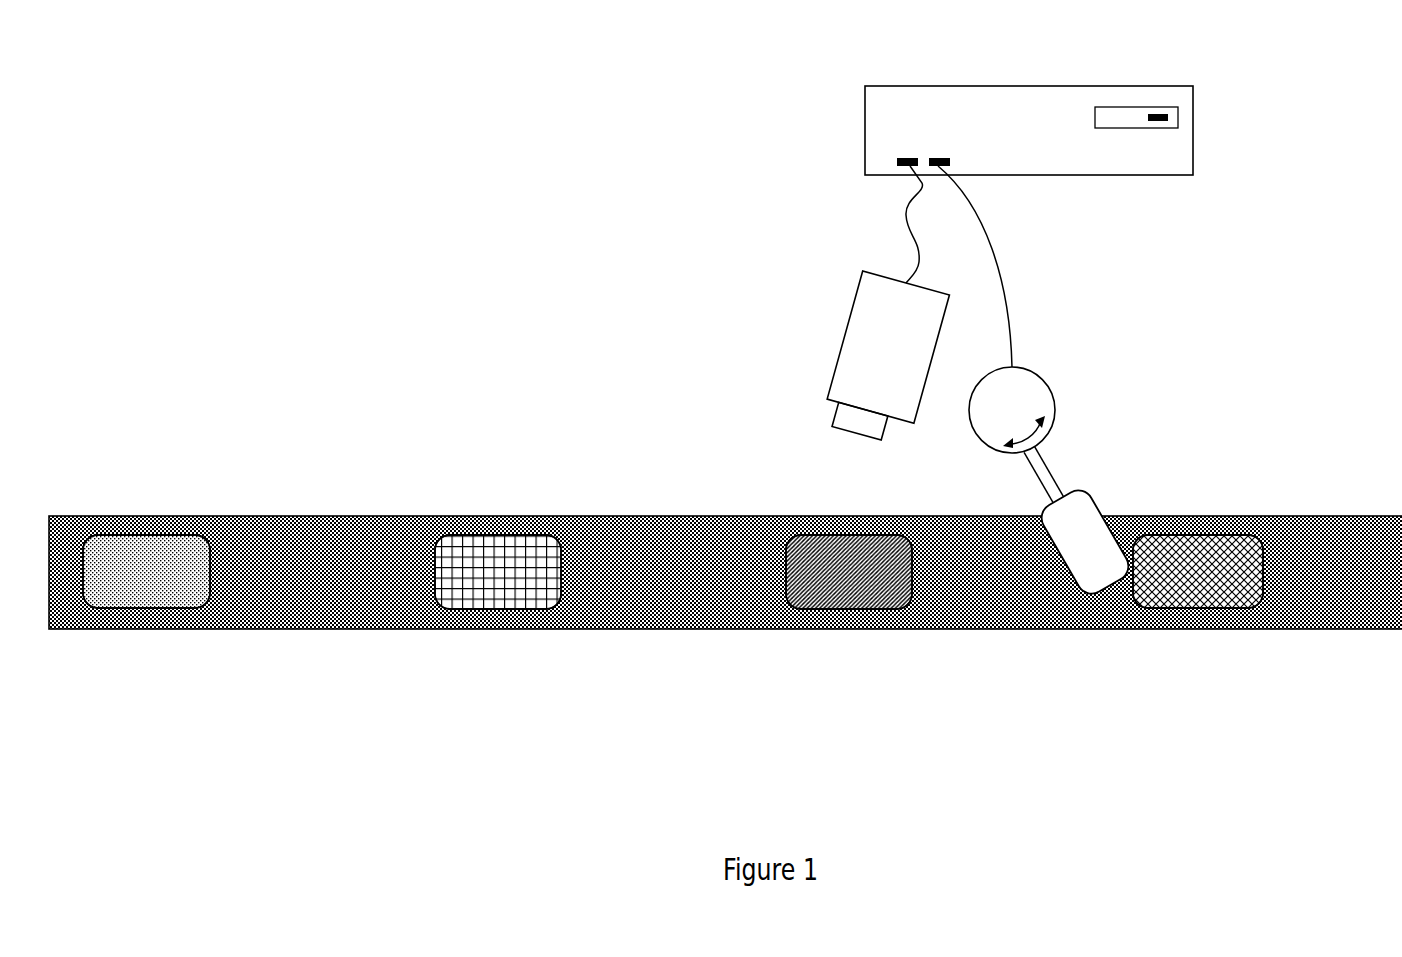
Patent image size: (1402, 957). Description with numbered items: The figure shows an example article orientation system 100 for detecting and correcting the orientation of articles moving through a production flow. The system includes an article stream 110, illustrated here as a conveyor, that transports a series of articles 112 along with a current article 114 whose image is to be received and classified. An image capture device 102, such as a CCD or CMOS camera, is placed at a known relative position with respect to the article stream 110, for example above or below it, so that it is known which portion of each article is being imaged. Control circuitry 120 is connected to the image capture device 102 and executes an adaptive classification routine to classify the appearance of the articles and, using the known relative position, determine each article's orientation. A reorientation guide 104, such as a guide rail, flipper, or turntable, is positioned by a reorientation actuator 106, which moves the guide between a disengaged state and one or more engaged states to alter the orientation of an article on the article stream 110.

The article orientation system 100 is at (126, 78).
The image capture device 102 is at (877, 275).
The reorientation guide 104 is at (1045, 507).
The reorientation actuator 106 is at (1005, 367).
The article stream 110 is at (136, 482).
The articles 112 is at (678, 575).
The current article 114 is at (850, 575).
The control circuitry 120 is at (887, 86).